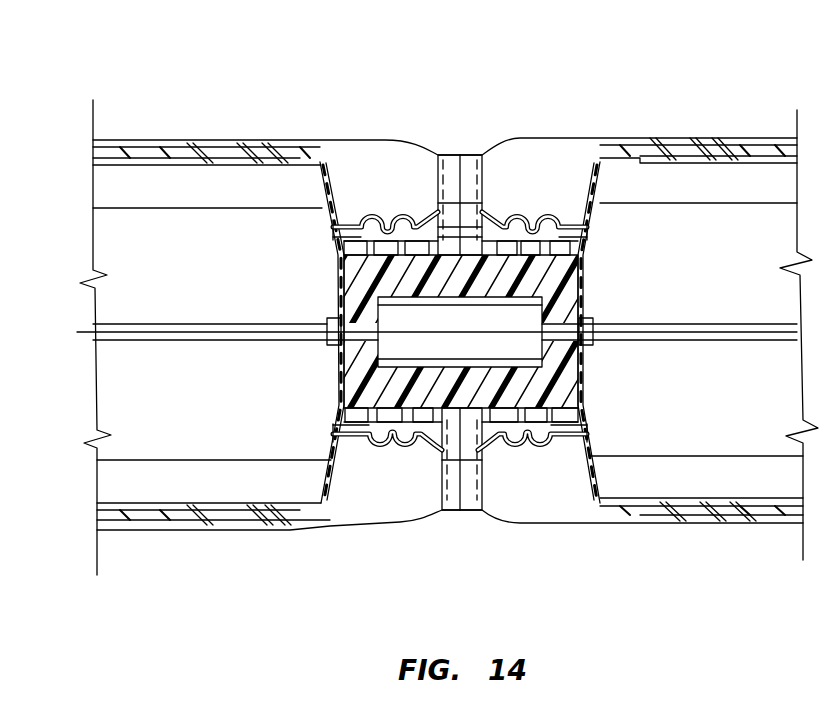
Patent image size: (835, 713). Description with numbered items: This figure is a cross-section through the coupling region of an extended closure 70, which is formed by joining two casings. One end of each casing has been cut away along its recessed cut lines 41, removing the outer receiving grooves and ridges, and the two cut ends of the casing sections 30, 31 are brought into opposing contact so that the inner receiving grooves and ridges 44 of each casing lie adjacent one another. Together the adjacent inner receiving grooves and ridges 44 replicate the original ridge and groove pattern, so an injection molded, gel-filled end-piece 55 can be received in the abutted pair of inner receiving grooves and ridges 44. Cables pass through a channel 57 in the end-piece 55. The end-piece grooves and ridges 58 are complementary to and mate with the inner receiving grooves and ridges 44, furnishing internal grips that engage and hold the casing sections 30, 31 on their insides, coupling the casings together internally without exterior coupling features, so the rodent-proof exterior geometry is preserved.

The extended closure 70 is at (274, 88).
The casing section 30 is at (681, 140).
The casing section 31 is at (185, 530).
The inner receiving grooves and ridges 44 is at (381, 212).
The recessed cut lines 41 is at (463, 505).
The end-piece 55 is at (335, 294).
The channel 57 is at (350, 346).
The end-piece grooves and ridges 58 is at (500, 430).